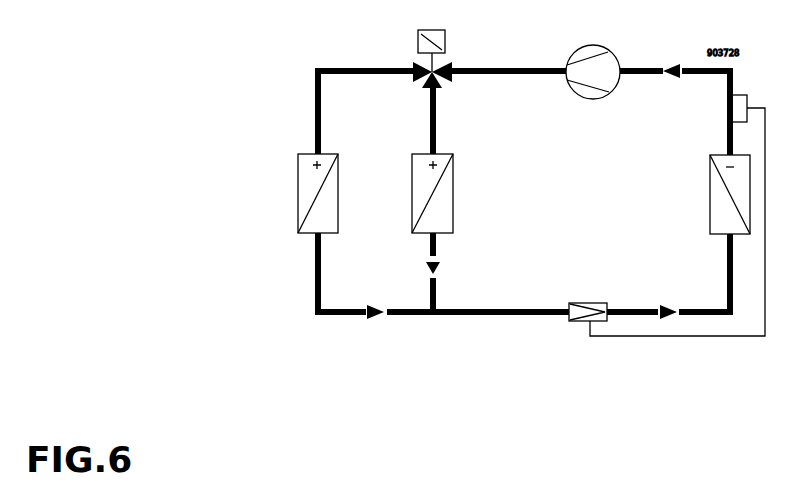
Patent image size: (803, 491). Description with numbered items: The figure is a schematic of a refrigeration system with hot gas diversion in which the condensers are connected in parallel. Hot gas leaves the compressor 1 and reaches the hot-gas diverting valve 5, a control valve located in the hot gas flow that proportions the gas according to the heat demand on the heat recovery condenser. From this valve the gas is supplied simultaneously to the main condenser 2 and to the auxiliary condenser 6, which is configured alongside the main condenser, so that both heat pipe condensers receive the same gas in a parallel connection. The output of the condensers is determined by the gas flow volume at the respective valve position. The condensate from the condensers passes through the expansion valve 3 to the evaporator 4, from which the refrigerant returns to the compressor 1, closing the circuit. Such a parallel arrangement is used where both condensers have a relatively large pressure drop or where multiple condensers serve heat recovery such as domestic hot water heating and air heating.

The compressor 1 is at (593, 82).
The main condenser 2 is at (439, 193).
The expansion valve 3 is at (588, 304).
The evaporator 4 is at (721, 194).
The hot-gas diverting valve 5 is at (437, 59).
The auxiliary condenser 6 is at (324, 193).